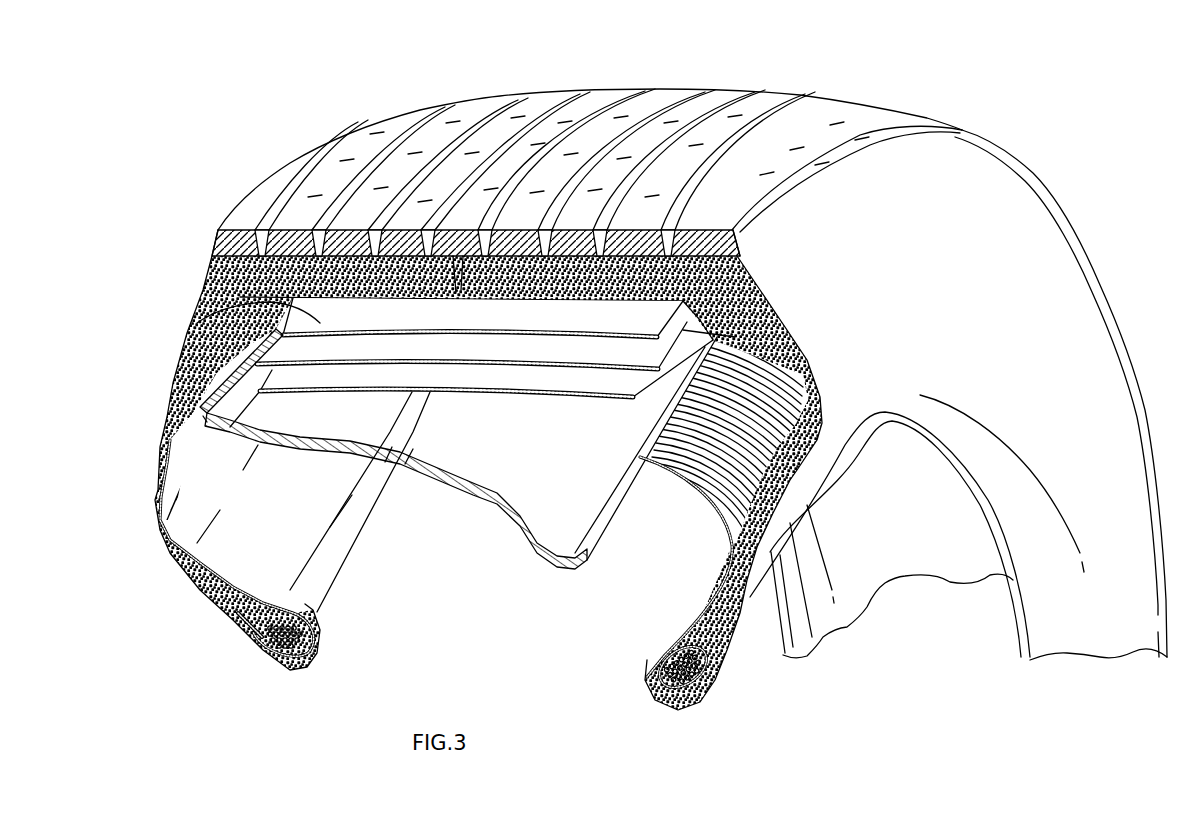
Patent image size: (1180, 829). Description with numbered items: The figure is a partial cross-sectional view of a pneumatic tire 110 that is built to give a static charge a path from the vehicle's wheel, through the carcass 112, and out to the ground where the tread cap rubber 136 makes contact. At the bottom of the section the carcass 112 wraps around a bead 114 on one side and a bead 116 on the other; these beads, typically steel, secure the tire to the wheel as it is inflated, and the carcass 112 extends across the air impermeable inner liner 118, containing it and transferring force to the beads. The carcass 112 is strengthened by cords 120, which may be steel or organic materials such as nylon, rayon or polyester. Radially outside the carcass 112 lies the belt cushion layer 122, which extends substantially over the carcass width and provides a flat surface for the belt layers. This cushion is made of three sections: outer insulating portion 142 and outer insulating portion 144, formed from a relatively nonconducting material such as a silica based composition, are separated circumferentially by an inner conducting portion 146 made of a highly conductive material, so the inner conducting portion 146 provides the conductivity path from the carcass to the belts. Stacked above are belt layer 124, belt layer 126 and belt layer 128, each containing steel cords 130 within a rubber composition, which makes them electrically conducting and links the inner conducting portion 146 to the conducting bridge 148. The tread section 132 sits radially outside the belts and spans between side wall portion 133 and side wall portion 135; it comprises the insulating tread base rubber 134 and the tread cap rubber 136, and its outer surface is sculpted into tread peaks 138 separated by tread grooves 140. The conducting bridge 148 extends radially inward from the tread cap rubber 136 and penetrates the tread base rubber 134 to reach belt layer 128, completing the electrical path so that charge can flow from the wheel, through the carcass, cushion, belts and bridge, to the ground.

The pneumatic tire 110 is at (1013, 72).
The carcass 112 is at (718, 675).
The bead 114 is at (270, 648).
The bead 116 is at (675, 680).
The inner liner 118 is at (315, 612).
The cords 120 is at (757, 393).
The belt cushion layer 122 is at (572, 577).
The belt layer 124 is at (293, 377).
The belt layer 126 is at (735, 337).
The belt layer 128 is at (197, 323).
The steel cords 130 is at (472, 397).
The tread section 132 is at (778, 247).
The side wall portion 133 is at (168, 381).
The tread base rubber 134 is at (227, 288).
The side wall portion 135 is at (1003, 247).
The tread cap rubber 136 is at (227, 242).
The tread peaks 138 is at (734, 233).
The tread grooves 140 is at (668, 230).
The outer insulating portion 142 is at (337, 427).
The outer insulating portion 144 is at (537, 497).
The inner conducting portion 146 is at (378, 465).
The conducting bridge 148 is at (458, 280).